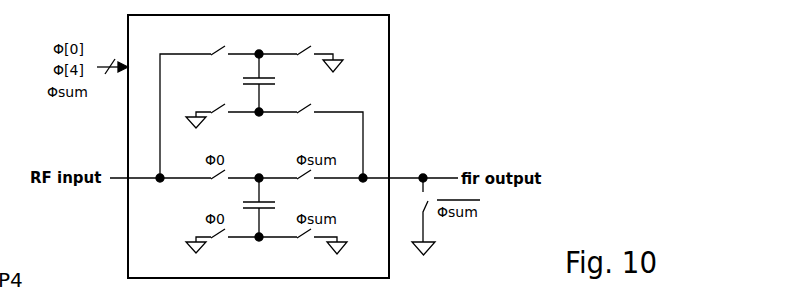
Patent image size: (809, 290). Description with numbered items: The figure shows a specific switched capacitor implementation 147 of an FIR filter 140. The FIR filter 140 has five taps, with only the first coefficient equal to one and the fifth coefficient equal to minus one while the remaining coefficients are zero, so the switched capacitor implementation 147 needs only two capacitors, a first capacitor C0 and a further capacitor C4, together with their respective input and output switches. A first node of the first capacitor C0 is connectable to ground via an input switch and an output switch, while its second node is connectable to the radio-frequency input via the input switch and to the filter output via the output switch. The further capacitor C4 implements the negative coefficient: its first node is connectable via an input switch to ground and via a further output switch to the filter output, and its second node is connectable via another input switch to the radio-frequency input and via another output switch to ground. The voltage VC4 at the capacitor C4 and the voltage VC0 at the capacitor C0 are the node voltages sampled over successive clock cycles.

The FIR filter 140 is at (428, 40).
The switched capacitor implementation 147 is at (333, 102).
The voltage at the condensator C4 VC4 is at (260, 43).
The capacitor C4 is at (267, 83).
The voltage at the capacitor C0 VC0 is at (263, 167).
The capacitor C0 is at (267, 207).